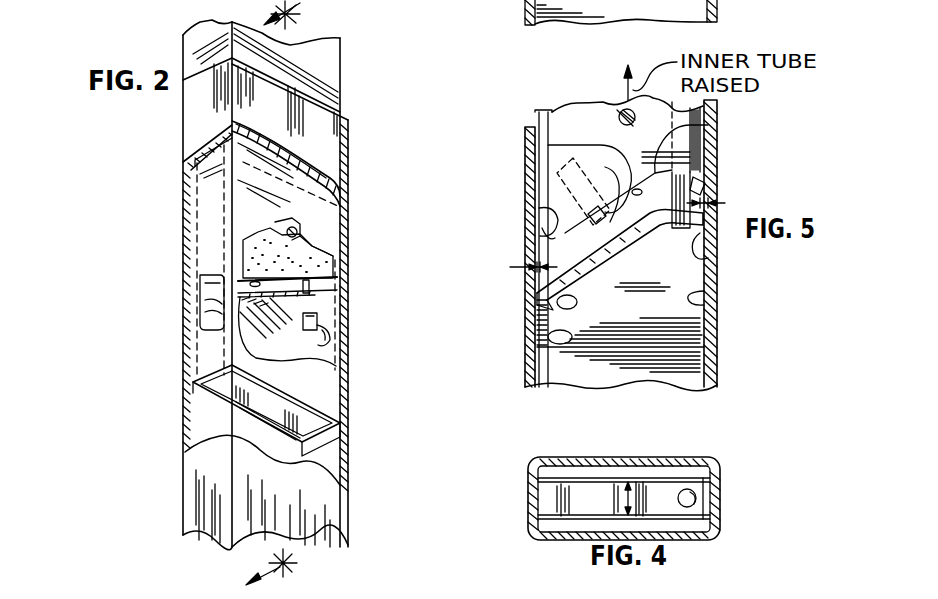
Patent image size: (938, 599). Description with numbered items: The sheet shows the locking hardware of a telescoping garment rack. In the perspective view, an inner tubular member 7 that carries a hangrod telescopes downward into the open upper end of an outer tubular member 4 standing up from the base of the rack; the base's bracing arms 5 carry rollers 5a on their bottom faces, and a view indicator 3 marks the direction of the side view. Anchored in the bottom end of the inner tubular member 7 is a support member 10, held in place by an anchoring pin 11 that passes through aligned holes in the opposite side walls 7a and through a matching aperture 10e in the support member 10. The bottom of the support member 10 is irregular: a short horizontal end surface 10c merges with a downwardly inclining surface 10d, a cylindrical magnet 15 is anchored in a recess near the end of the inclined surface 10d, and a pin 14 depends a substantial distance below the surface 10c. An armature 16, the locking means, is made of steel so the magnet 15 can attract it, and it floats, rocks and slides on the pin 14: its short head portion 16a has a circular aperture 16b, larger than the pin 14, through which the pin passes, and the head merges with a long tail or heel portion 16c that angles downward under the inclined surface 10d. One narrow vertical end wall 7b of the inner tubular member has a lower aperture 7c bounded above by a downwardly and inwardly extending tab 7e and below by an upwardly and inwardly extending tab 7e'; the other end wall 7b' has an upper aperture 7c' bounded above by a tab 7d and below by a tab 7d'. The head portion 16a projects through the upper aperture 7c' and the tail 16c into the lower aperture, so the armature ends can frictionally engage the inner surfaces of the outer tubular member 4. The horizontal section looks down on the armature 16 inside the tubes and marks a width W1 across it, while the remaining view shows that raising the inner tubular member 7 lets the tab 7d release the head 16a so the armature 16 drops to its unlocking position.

In FIG. 2, the section line for FIG. 3 is at (279, 563).
In FIG. 2, the outer tubular member 4 is at (350, 163).
In FIG. 5, the outer tubular member 4 is at (621, 245).
In FIG. 4, the outer tubular member 4 is at (520, 500).
In FIG. 2, the bracing arm 5 is at (289, 14).
In FIG. 2, the roller 5a is at (128, 0).
In FIG. 2, the inner tubular member 7 is at (345, 70).
In FIG. 2, the side wall 7a is at (327, 210).
In FIG. 5, the side wall 7a is at (703, 340).
In FIG. 2, the narrow vertical end wall 7b is at (163, 181).
In FIG. 5, the narrow vertical end wall 7b is at (511, 332).
In FIG. 5, the inner tube tab 7b' is at (739, 296).
In FIG. 2, the lower aperture 7c is at (163, 329).
In FIG. 5, the lower aperture 7c is at (499, 245).
In FIG. 2, the upper aperture 7c' is at (329, 331).
In FIG. 2, the downwardly and inwardly extending tab 7d is at (167, 302).
In FIG. 5, the downwardly and inwardly extending tab 7d is at (737, 177).
In FIG. 2, the upwardly and inwardly extending tab 7d' is at (370, 351).
In FIG. 5, the upwardly and inwardly extending tab 7d' is at (743, 253).
In FIG. 2, the downwardly and inwardly extending tab 7e is at (355, 233).
In FIG. 5, the downwardly and inwardly extending tab 7e is at (515, 214).
In FIG. 5, the upwardly and inwardly extending tab 7e' is at (519, 307).
In FIG. 2, the support member 10 is at (338, 281).
In FIG. 5, the support member 10 is at (586, 137).
In FIG. 5, the horizontal end surface 10c is at (690, 125).
In FIG. 5, the downwardly inclining surface 10d is at (548, 145).
In FIG. 5, the aperture 10e is at (620, 110).
In FIG. 2, the anchoring pin 11 is at (287, 233).
In FIG. 5, the anchoring pin 11 is at (619, 116).
In FIG. 4, the pin 14 is at (692, 488).
In FIG. 5, the cylindrical magnet 15 is at (613, 174).
In FIG. 5, the armature member 16 is at (655, 373).
In FIG. 4, the armature member 16 is at (604, 511).
In FIG. 4, the head portion 16a is at (667, 483).
In FIG. 4, the circular aperture 16b is at (700, 500).
In FIG. 4, the tail portion 16c is at (567, 488).
In FIG. 4, the latch bar width W1 is at (648, 478).